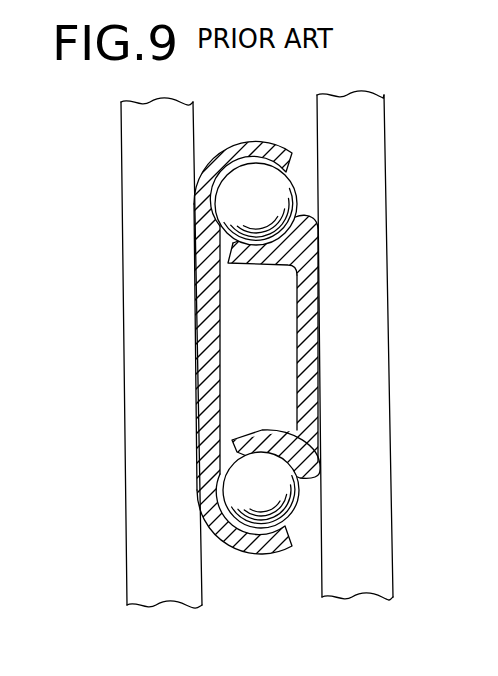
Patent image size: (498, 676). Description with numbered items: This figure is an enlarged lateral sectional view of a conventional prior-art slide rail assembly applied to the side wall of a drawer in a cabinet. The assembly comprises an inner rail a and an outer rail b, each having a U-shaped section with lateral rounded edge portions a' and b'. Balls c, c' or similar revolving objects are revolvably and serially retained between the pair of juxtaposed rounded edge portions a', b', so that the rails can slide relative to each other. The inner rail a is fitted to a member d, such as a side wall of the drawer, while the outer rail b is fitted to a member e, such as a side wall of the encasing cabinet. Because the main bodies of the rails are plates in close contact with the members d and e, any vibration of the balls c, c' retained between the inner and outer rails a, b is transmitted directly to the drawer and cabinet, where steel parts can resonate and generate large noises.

The inner rail a is at (249, 360).
The lateral rounded edge portion of the inner rail a' is at (274, 346).
The outer rail b is at (249, 360).
The lateral rounded edge portion of the outer rail b' is at (244, 344).
The ball c is at (285, 204).
The ball c' is at (291, 490).
The member d is at (368, 292).
The member e is at (135, 228).